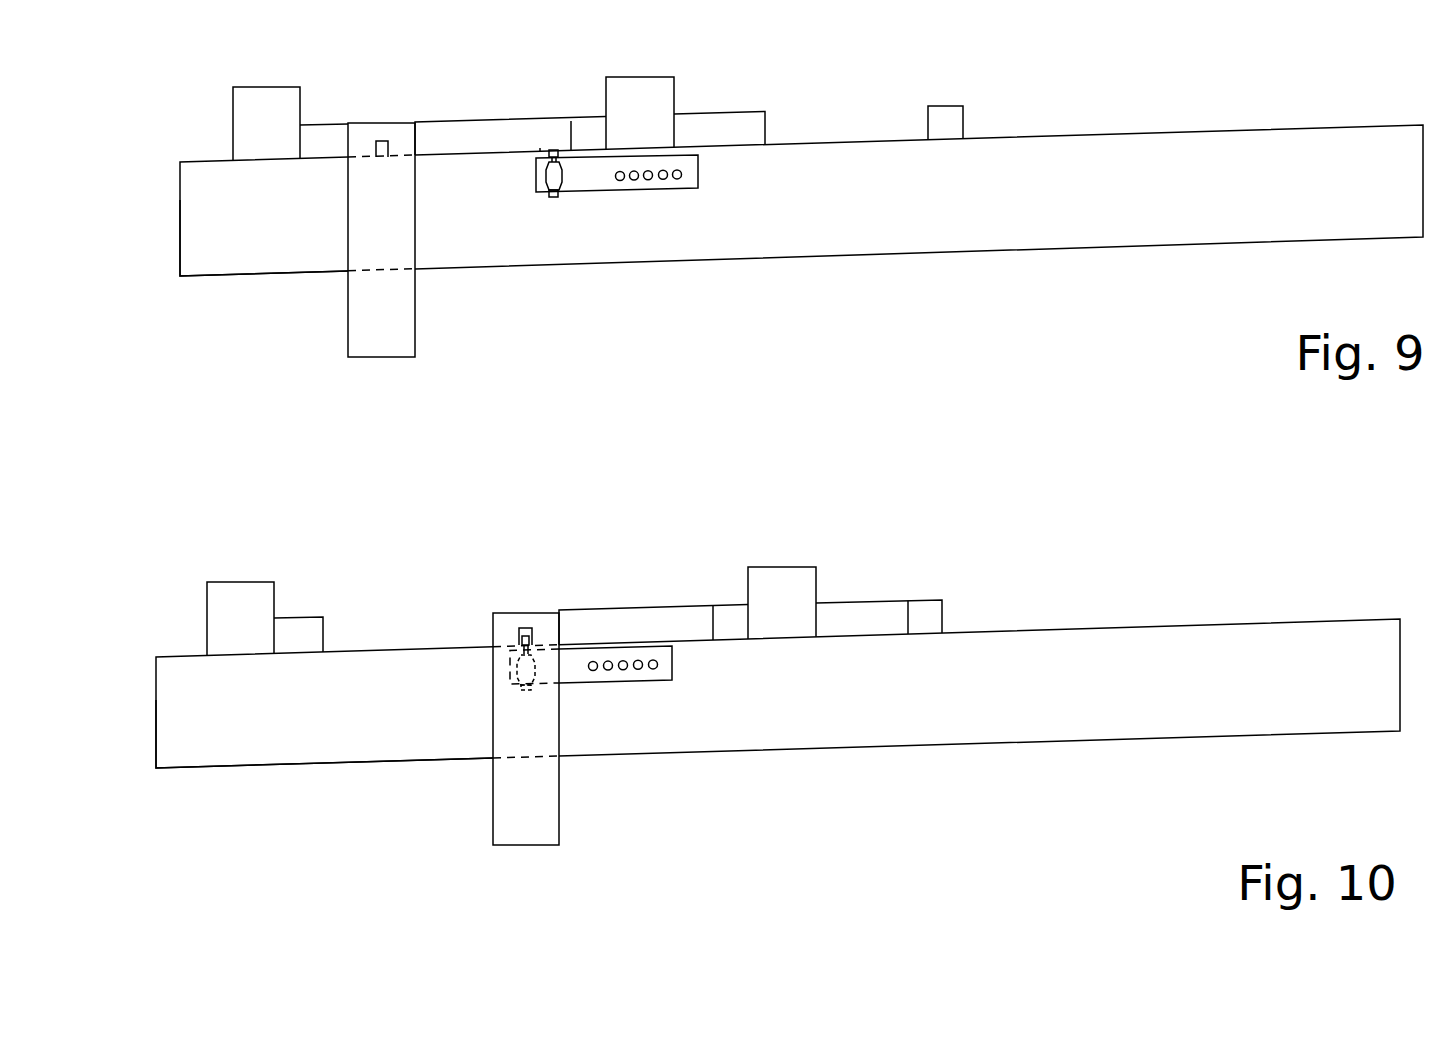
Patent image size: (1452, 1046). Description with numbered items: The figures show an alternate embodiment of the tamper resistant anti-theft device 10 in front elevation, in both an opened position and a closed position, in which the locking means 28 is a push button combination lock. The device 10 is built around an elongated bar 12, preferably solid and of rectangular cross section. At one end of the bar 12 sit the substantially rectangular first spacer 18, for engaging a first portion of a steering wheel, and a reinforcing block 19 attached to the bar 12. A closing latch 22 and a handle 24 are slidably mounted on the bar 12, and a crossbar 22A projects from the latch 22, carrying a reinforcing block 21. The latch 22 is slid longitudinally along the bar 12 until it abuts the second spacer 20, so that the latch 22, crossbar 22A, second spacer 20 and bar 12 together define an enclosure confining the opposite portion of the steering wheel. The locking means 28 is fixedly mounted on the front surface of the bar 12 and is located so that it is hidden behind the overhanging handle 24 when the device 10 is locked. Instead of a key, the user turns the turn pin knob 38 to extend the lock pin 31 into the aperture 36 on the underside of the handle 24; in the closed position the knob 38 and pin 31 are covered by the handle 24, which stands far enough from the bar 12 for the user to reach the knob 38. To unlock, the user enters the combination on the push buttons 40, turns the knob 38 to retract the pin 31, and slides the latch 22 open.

In FIG. 9, the device 10 is at (1299, 112).
In FIG. 10, the device 10 is at (1273, 606).
In FIG. 9, the elongated bar 12 is at (1188, 245).
In FIG. 10, the elongated bar 12 is at (1165, 738).
In FIG. 9, the first spacer 18 is at (323, 127).
In FIG. 10, the first spacer 18 is at (298, 622).
In FIG. 9, the reinforcing block 19 is at (253, 92).
In FIG. 10, the reinforcing block 19 is at (227, 587).
In FIG. 9, the second spacer 20 is at (946, 106).
In FIG. 10, the second spacer 20 is at (943, 604).
In FIG. 9, the reinforcing block 21 is at (674, 97).
In FIG. 10, the reinforcing block 21 is at (817, 580).
In FIG. 9, the closing latch 22 is at (472, 118).
In FIG. 10, the closing latch 22 is at (597, 607).
In FIG. 9, the crossbar 22A is at (590, 117).
In FIG. 10, the crossbar 22A is at (727, 608).
In FIG. 9, the handle 24 is at (418, 327).
In FIG. 10, the handle 24 is at (560, 812).
In FIG. 9, the locking means 28 is at (595, 192).
In FIG. 10, the locking means 28 is at (577, 683).
In FIG. 9, the lock pin 31 is at (540, 148).
In FIG. 10, the lock pin 31 is at (531, 650).
In FIG. 9, the aperture 36 is at (388, 140).
In FIG. 10, the aperture 36 is at (520, 630).
In FIG. 9, the turn pin knob 38 is at (545, 197).
In FIG. 10, the turn pin knob 38 is at (514, 683).
In FIG. 9, the push buttons 40 is at (683, 182).
In FIG. 10, the push buttons 40 is at (653, 672).